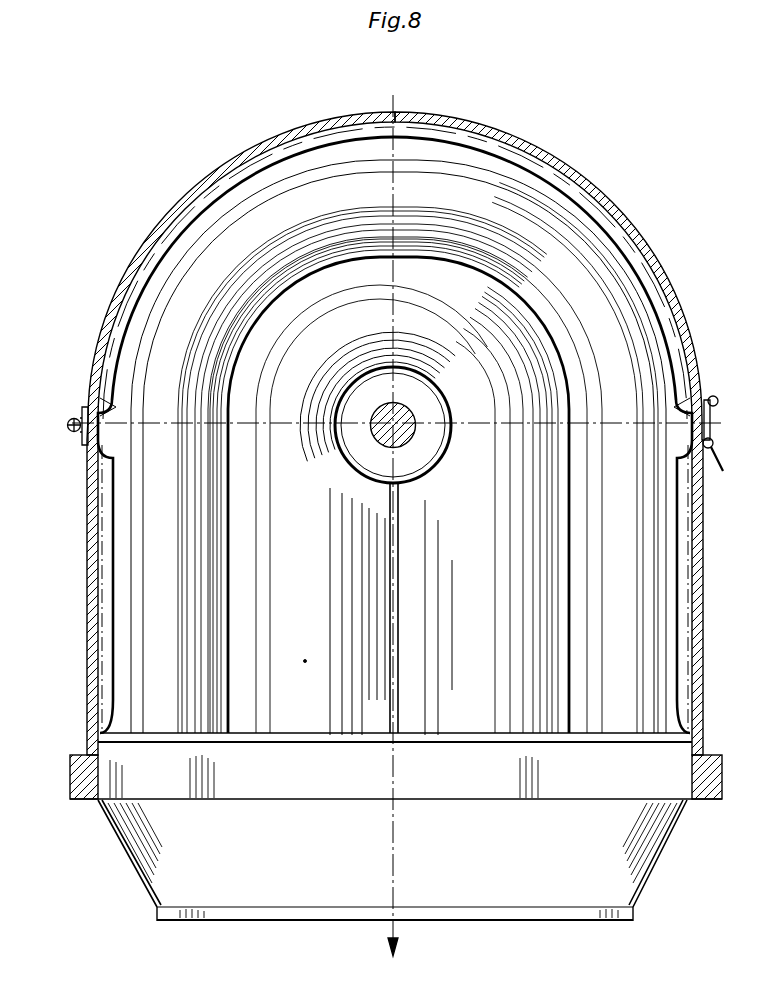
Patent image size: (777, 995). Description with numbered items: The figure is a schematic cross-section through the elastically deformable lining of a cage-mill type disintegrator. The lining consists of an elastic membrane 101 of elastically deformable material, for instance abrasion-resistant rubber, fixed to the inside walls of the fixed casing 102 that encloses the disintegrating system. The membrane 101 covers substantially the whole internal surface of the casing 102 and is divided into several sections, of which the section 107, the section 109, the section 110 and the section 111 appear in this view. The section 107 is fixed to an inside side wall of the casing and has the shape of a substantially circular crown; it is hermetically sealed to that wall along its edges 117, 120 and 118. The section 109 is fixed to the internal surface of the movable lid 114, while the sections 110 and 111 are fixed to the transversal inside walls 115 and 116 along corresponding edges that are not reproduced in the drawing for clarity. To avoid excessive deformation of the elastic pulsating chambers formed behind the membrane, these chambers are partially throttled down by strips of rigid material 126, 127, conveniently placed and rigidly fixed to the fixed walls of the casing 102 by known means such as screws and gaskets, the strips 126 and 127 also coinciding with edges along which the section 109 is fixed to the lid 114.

The elastic membrane 101 is at (433, 138).
The fixed casing 102 is at (92, 671).
The membrane section 107 is at (305, 661).
The membrane section 109 is at (338, 138).
The membrane section 110 is at (110, 585).
The membrane section 111 is at (692, 655).
The movable lid 114 is at (515, 143).
The transversal inside wall 115 is at (95, 532).
The transversal inside wall 116 is at (695, 505).
The edge 117 is at (120, 292).
The edge 118 is at (450, 402).
The edge 120 is at (602, 742).
The strip of rigid material 126 is at (703, 385).
The strip of rigid material 127 is at (92, 398).